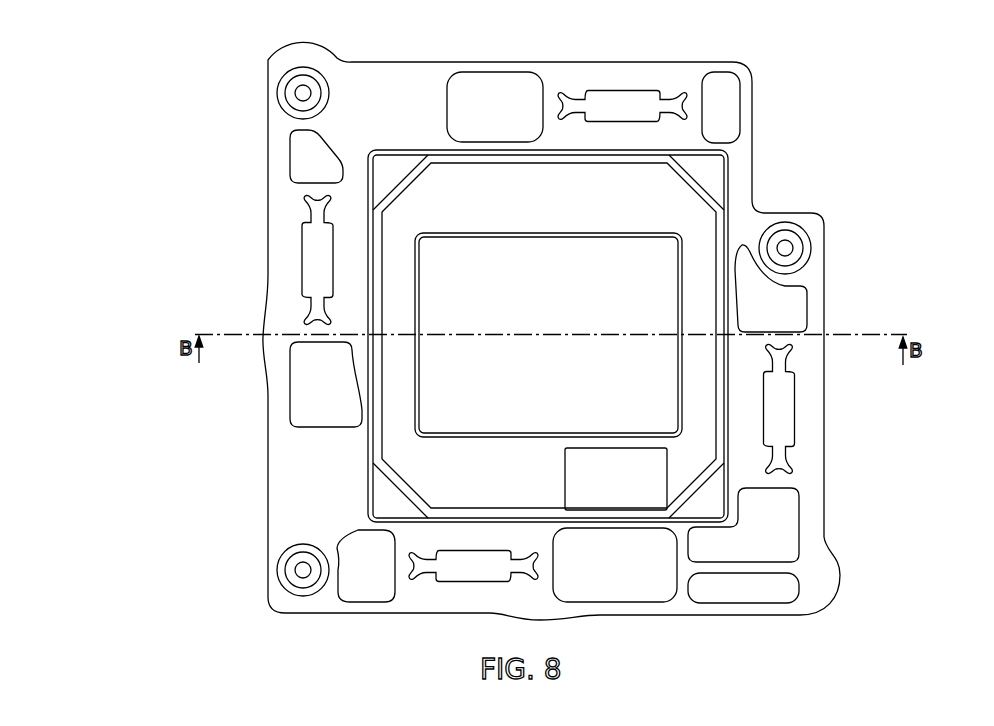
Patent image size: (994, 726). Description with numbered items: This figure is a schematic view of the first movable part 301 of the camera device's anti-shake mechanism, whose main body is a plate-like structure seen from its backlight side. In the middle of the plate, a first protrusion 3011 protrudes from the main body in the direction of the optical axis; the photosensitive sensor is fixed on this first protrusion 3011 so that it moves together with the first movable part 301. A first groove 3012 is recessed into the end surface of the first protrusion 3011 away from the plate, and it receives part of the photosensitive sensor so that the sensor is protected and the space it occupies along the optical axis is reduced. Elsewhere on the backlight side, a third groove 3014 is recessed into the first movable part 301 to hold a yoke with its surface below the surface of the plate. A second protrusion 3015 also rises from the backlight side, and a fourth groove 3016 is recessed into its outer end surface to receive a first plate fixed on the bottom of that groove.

The first movable part 301 is at (268, 174).
The first protrusion 3011 is at (369, 433).
The first groove 3012 is at (428, 468).
The third groove 3014 is at (317, 278).
The second protrusion 3015 is at (281, 79).
The fourth groove 3016 is at (292, 100).